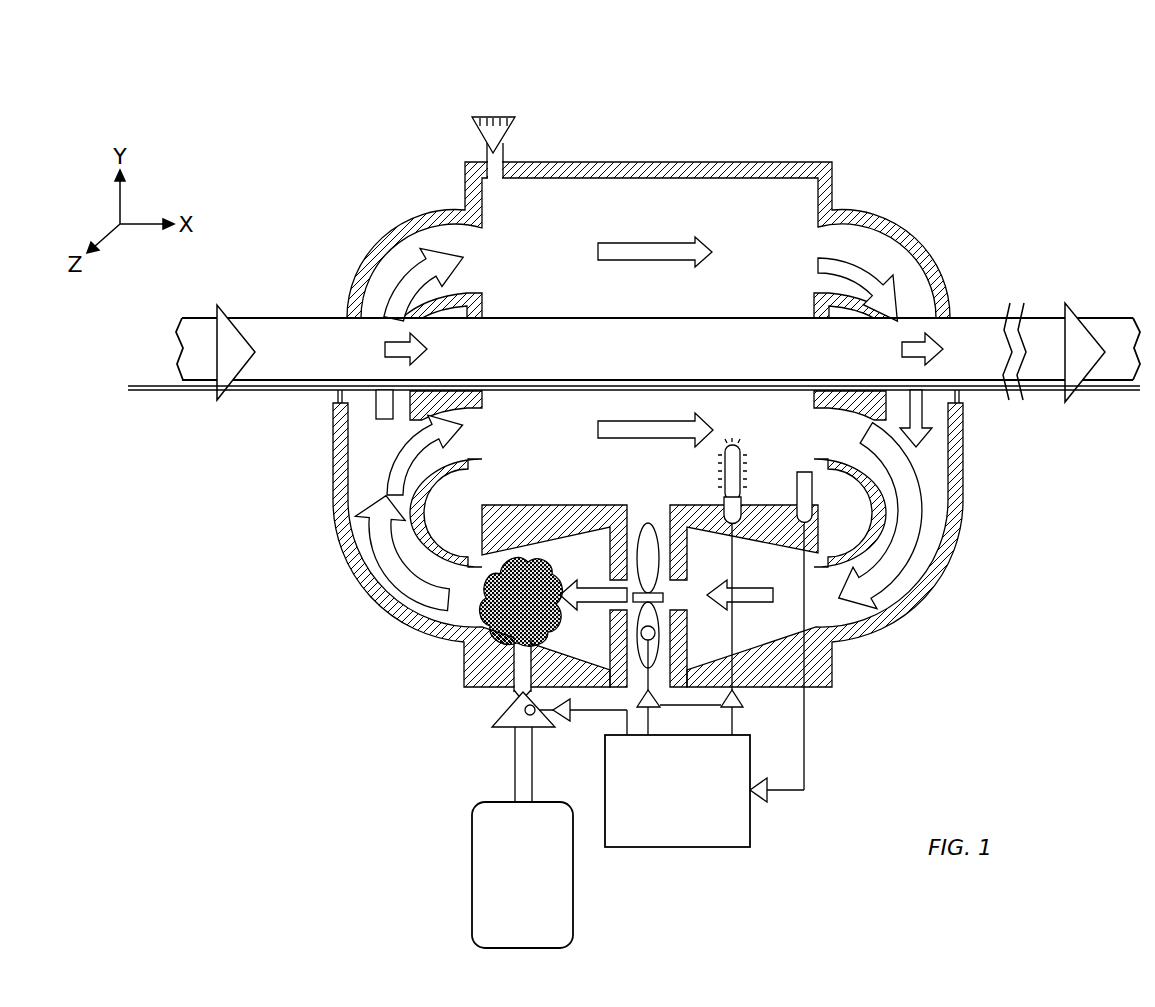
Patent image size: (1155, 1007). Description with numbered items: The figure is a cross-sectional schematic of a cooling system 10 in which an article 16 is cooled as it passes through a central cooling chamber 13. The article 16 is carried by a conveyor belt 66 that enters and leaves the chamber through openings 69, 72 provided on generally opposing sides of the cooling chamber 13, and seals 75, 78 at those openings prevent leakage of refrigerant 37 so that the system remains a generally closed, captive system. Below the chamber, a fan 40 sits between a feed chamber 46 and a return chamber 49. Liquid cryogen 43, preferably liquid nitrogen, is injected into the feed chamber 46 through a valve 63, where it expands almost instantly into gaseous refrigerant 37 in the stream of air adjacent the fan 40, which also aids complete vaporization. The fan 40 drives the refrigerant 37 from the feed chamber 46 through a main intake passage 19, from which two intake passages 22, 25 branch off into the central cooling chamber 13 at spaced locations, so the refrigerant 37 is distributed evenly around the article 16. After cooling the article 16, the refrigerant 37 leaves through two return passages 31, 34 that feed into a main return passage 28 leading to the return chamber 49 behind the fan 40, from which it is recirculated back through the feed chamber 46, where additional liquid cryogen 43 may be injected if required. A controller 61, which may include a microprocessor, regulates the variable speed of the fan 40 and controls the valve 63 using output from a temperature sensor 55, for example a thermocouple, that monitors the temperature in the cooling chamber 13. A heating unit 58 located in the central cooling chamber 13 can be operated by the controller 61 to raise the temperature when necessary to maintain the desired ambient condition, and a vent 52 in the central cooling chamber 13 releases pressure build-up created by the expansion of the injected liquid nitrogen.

The cooling system 10 is at (972, 214).
The central cooling chamber 13 is at (658, 198).
The article 16 is at (270, 328).
The main intake passage 19 is at (385, 575).
The intake passage 22 is at (470, 408).
The intake passage 25 is at (457, 232).
The main return passage 28 is at (928, 472).
The return passage 31 is at (826, 410).
The return passage 34 is at (842, 232).
The refrigerant 37 is at (546, 572).
The fan 40 is at (647, 543).
The liquid cryogen 43 is at (472, 891).
The feed chamber 46 is at (572, 635).
The return chamber 49 is at (762, 627).
The vent 52 is at (507, 140).
The temperature sensor 55 is at (797, 487).
The heating unit 58 is at (724, 472).
The controller 61 is at (707, 848).
The valve 63 is at (500, 706).
The conveyor belt 66 is at (152, 391).
The opening 69 is at (341, 316).
The opening 72 is at (959, 392).
The seal 75 is at (333, 397).
The seal 78 is at (957, 316).